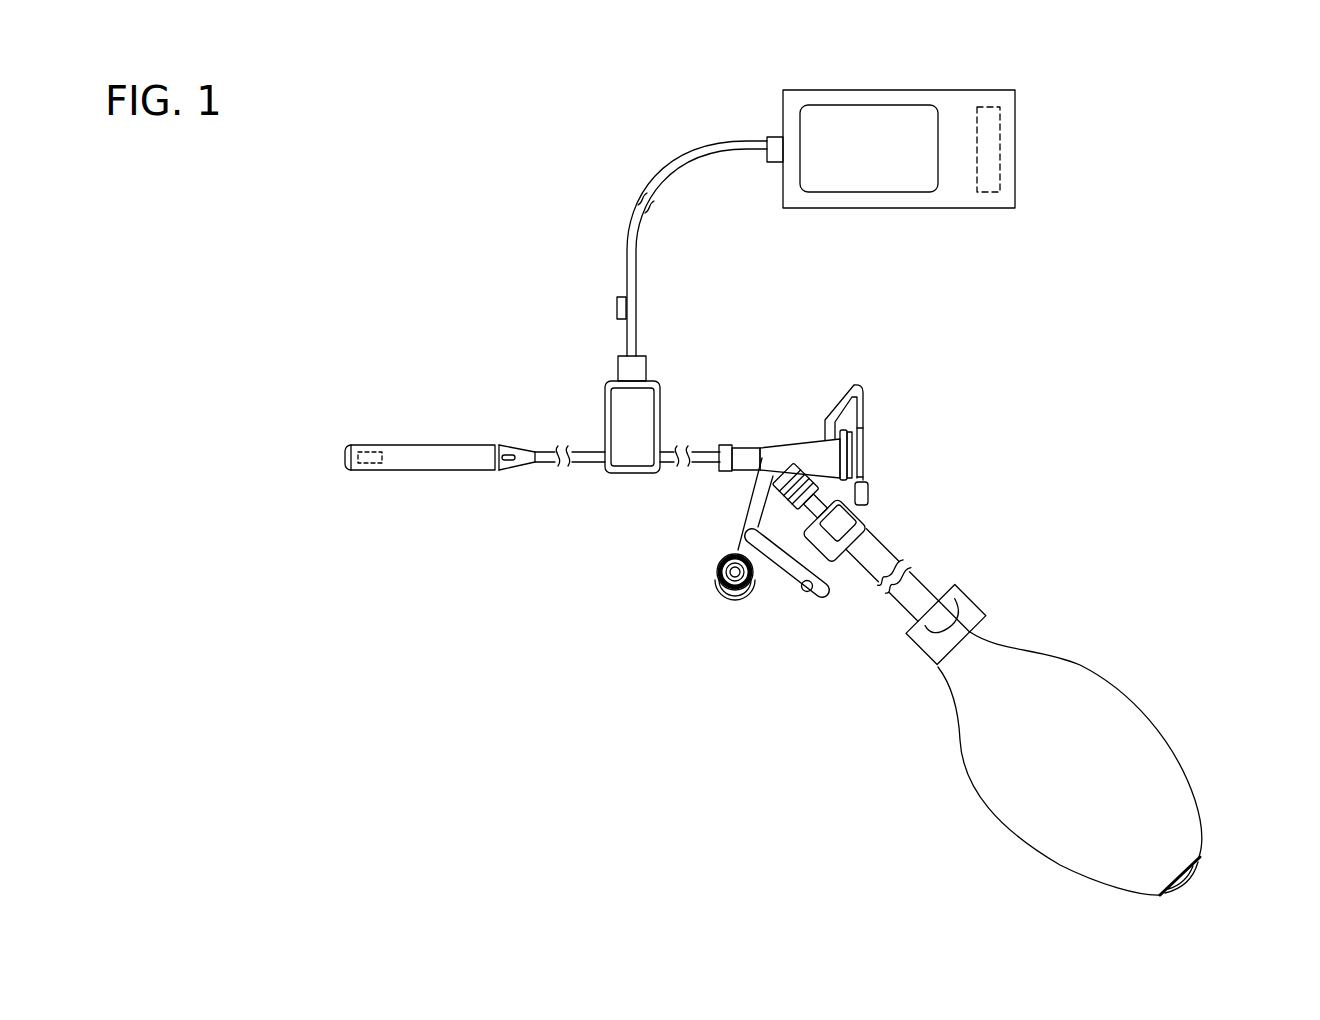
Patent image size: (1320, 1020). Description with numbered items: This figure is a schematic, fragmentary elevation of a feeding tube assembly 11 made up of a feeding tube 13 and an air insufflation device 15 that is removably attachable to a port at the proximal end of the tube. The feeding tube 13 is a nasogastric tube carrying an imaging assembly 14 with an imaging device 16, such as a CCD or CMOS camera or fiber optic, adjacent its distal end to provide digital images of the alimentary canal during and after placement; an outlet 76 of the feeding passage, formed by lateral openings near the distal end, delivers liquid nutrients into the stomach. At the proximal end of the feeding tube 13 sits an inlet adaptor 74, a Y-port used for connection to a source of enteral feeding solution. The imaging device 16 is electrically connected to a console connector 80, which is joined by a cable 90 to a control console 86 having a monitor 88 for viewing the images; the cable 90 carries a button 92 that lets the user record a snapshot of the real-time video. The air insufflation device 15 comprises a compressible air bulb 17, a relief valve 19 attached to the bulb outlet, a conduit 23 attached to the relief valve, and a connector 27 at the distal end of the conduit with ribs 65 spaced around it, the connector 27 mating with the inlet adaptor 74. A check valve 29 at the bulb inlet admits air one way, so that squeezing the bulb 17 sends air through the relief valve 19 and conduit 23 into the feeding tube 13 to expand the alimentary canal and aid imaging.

The feeding tube assembly 11 is at (1158, 250).
The feeding tube 13 is at (582, 465).
The imaging assembly 14 is at (432, 483).
The air insufflation device 15 is at (939, 611).
The imaging device 16 is at (370, 447).
The compressible air bulb 17 is at (1125, 723).
The relief valve 19 is at (994, 586).
The conduit 23 is at (897, 617).
The connector 27 is at (843, 577).
The check valve 29 is at (1193, 885).
The ribs 65 is at (866, 513).
The inlet adaptor 74 is at (794, 424).
The outlet 76 is at (510, 467).
The console connector 80 is at (625, 415).
The control console 86 is at (942, 149).
The monitor 88 is at (878, 162).
The cable 90 is at (690, 157).
The button 92 is at (616, 308).